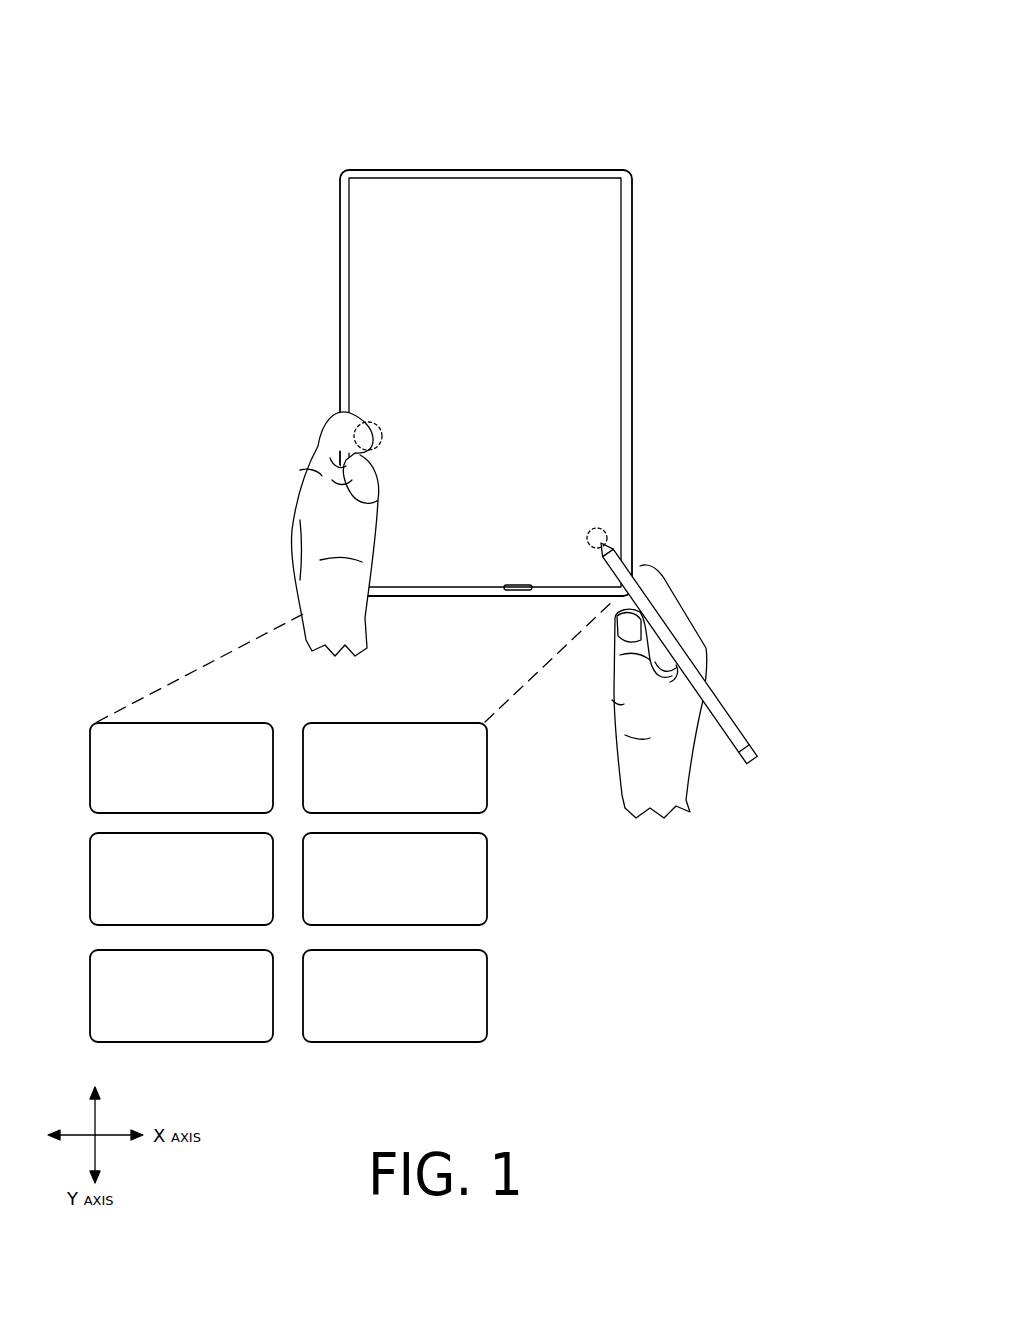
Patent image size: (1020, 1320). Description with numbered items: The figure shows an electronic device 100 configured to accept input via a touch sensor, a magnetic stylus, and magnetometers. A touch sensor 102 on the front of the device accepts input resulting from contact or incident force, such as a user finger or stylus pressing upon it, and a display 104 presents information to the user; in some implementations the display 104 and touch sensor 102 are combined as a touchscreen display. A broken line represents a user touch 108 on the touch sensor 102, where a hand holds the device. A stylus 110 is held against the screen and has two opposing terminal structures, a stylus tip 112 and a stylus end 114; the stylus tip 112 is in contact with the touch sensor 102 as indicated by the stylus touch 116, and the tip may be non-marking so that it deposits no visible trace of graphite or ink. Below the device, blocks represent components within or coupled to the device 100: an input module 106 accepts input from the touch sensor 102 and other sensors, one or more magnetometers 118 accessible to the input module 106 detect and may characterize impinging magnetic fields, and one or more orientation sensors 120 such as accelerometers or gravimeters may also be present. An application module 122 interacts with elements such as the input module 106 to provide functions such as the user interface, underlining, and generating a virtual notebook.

The electronic device 100 is at (703, 66).
The touch sensor 102 is at (513, 173).
The display 104 is at (383, 193).
The input module 106 is at (181, 996).
The user touch 108 is at (366, 424).
The stylus 110 is at (725, 713).
The stylus tip 112 is at (603, 542).
The stylus end 114 is at (742, 768).
The stylus touch 116 is at (601, 532).
The magnetometer 118 is at (395, 768).
The orientation sensor 120 is at (395, 879).
The application module 122 is at (395, 996).